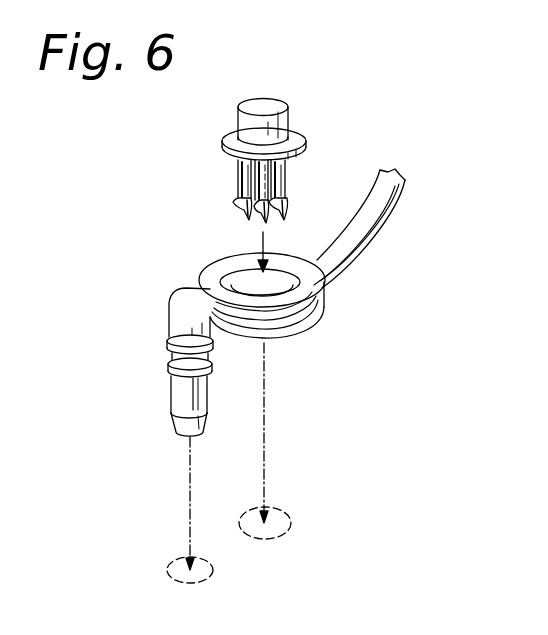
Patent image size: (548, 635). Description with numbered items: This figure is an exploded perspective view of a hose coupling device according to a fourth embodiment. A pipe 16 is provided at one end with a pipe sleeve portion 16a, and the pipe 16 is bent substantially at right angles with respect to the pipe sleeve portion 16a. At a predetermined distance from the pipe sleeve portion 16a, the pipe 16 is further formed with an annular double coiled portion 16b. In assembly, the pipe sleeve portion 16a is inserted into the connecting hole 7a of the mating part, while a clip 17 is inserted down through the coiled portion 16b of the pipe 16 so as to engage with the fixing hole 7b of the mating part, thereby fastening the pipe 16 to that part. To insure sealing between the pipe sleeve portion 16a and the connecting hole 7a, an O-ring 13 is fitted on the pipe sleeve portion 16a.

The clip 17 is at (263, 97).
The pipe 16 is at (406, 180).
The annular double coiled portion 16b is at (325, 287).
The pipe sleeve portion 16a is at (171, 402).
The O-ring 13 is at (167, 365).
The connecting hole 7a is at (168, 574).
The fixing hole 7b is at (292, 528).